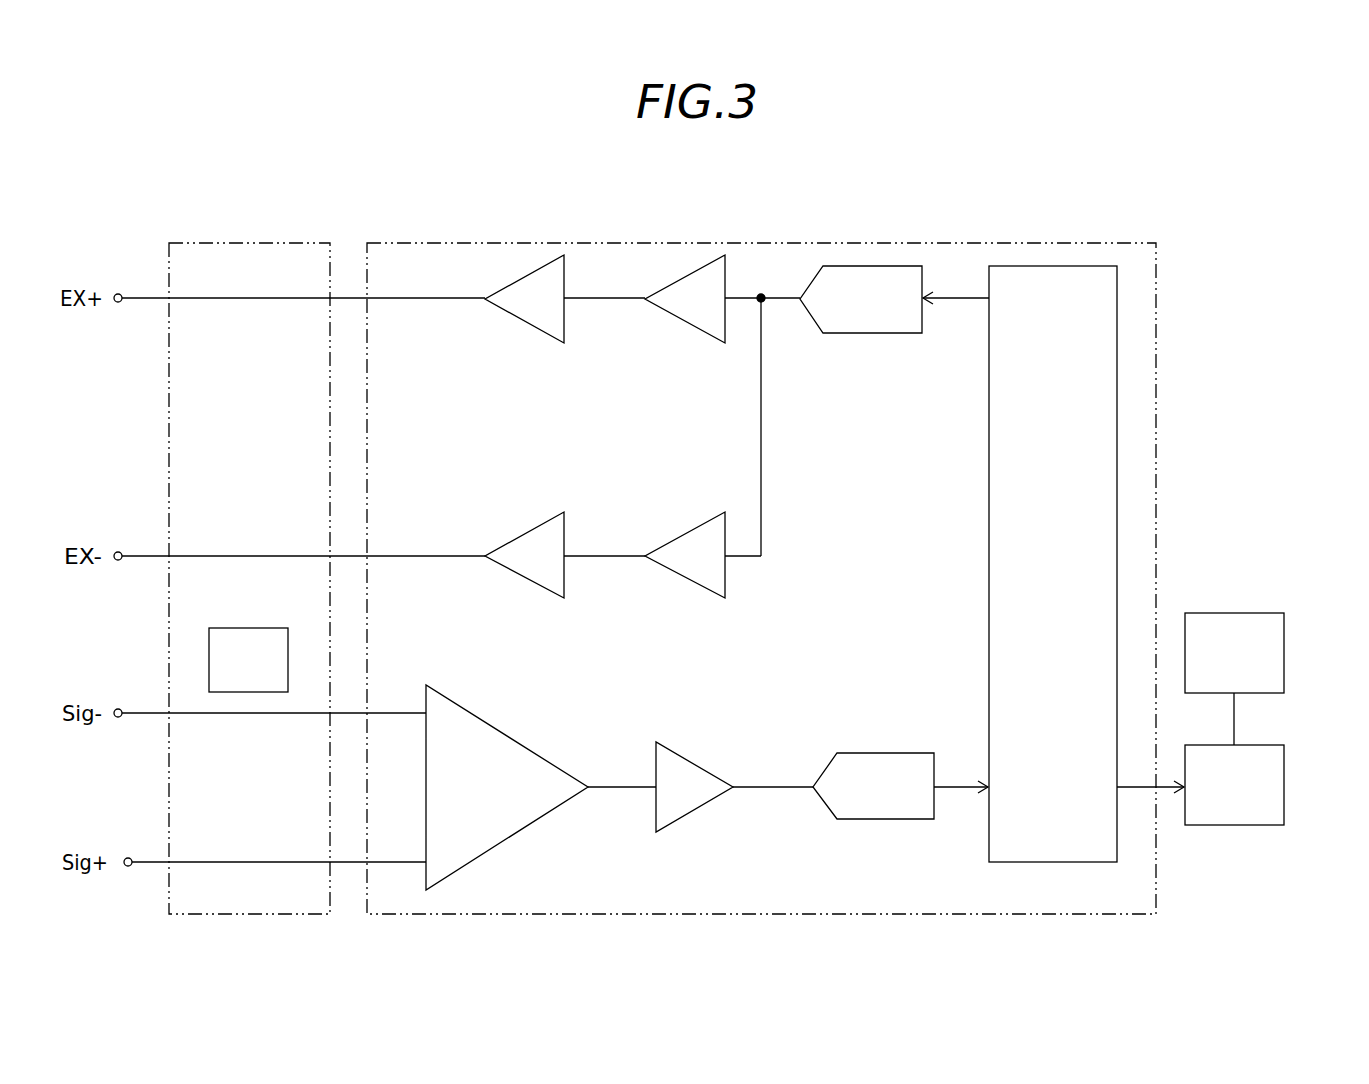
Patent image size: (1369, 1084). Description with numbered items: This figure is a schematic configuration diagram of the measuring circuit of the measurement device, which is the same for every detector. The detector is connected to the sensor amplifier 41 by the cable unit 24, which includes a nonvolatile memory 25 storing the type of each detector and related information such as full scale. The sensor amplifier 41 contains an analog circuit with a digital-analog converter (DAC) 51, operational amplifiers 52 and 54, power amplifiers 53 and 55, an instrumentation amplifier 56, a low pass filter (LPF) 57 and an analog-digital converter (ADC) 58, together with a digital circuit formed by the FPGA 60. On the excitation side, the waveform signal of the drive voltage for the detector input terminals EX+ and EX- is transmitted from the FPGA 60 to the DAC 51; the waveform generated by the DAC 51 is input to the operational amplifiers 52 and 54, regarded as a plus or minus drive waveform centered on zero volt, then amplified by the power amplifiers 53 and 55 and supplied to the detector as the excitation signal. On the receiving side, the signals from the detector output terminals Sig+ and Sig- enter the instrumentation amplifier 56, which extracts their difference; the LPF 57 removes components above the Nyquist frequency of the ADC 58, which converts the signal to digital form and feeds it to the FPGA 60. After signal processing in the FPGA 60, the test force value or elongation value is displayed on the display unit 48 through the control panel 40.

The cable unit 24 is at (250, 243).
The nonvolatile memory 25 is at (250, 628).
The sensor amplifier 41 is at (762, 243).
The digital-analog converter (DAC) 51 is at (860, 333).
The operational amplifier 52 is at (684, 322).
The power amplifier 53 is at (524, 322).
The operational amplifier 54 is at (684, 532).
The power amplifier 55 is at (528, 532).
The instrumentation amplifier 56 is at (523, 815).
The low pass filter (LPF) 57 is at (695, 810).
The analog-digital converter (ADC) 58 is at (875, 819).
The FPGA 60 is at (1117, 565).
The display unit 48 is at (1284, 650).
The control panel 40 is at (1284, 785).